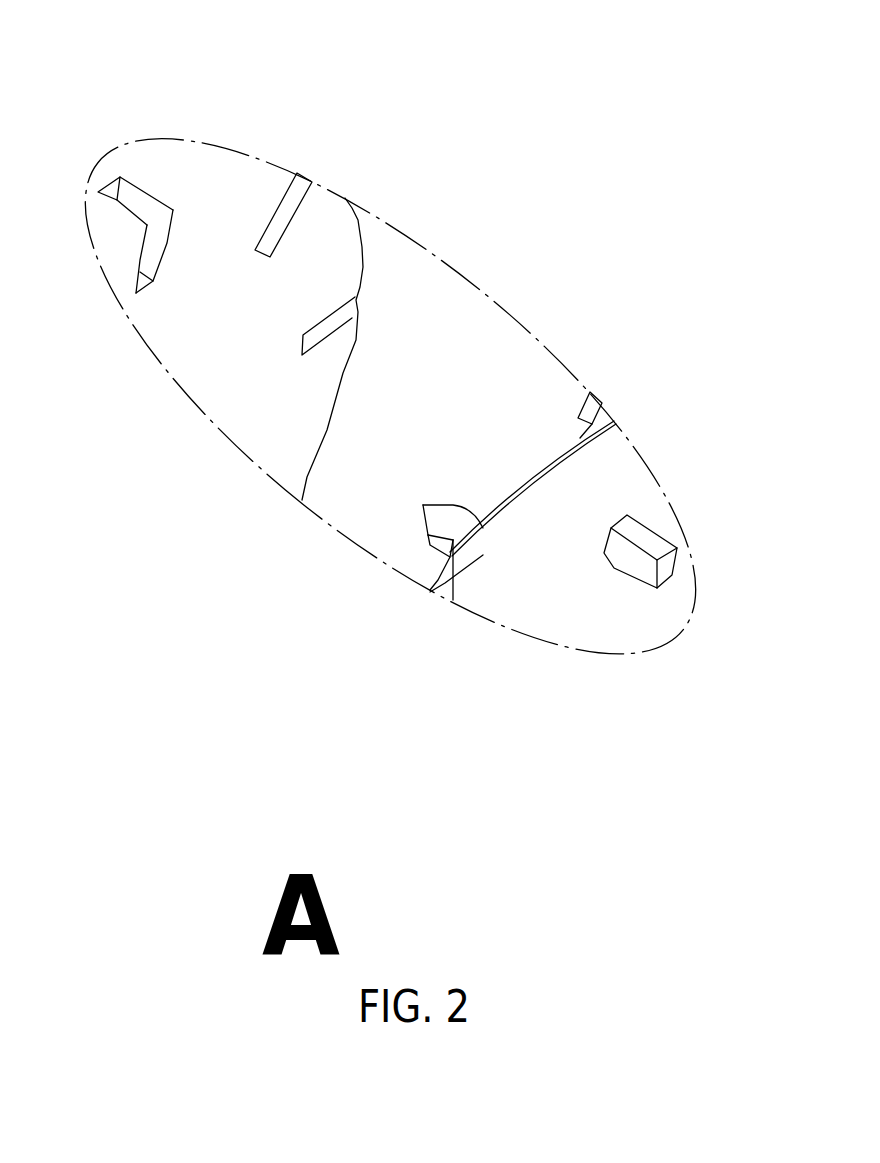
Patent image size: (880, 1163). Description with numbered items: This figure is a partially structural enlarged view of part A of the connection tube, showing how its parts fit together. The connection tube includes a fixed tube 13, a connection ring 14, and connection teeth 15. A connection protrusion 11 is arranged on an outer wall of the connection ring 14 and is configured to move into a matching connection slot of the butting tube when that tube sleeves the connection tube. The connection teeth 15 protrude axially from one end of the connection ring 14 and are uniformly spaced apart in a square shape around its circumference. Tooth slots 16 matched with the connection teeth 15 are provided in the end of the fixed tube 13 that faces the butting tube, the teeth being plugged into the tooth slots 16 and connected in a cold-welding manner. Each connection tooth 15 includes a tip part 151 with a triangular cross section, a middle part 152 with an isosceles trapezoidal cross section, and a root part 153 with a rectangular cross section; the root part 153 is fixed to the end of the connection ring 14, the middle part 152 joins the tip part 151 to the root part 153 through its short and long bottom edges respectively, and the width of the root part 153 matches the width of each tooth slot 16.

The connection protrusion 11 is at (638, 558).
The fixed tube 13 is at (223, 390).
The connection ring 14 is at (557, 480).
The connection teeth 15 is at (321, 642).
The tip part 151 is at (423, 505).
The middle part 152 is at (445, 543).
The root part 153 is at (453, 600).
The tooth slots 16 is at (135, 293).